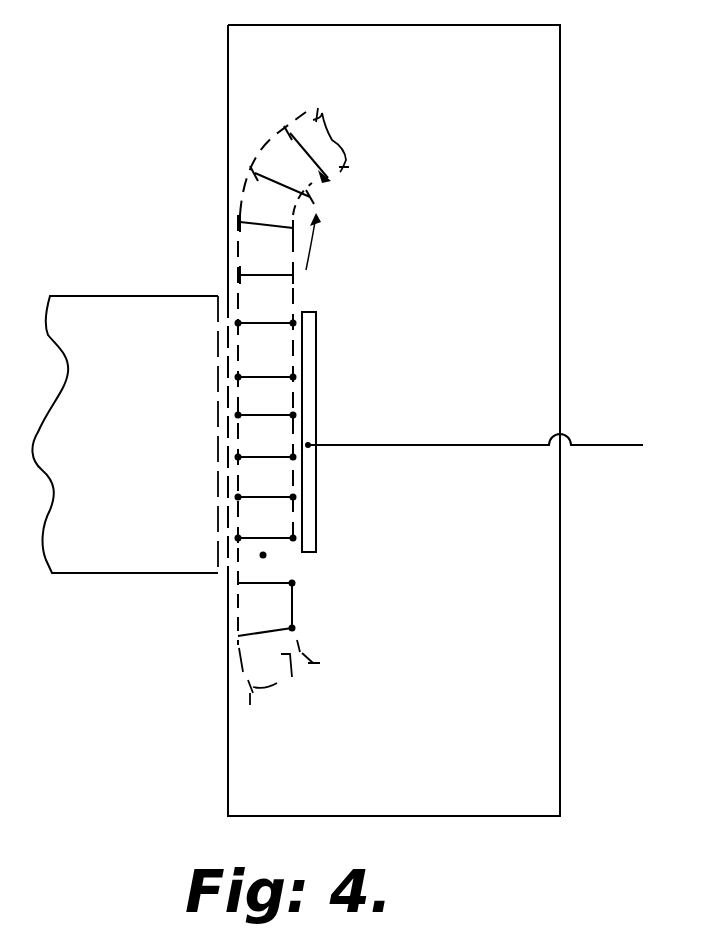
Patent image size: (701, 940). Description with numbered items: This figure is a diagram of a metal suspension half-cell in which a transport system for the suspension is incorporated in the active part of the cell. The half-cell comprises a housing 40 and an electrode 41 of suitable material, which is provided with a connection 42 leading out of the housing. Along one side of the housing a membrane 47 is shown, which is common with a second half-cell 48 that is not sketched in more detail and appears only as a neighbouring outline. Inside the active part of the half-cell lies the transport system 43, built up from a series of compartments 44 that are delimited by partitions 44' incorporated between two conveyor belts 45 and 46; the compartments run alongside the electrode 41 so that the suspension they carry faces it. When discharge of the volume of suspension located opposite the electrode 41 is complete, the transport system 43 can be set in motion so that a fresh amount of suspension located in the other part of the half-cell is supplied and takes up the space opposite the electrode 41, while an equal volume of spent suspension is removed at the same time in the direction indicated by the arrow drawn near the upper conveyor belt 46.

The housing 40 is at (560, 293).
The electrode 41 is at (308, 367).
The connection 42 is at (598, 446).
The transport system 43 is at (291, 660).
The compartments 44 is at (295, 403).
The partitions 44' is at (308, 479).
The conveyor belt 45 is at (235, 623).
The conveyor belt 46 is at (313, 190).
The membrane 47 is at (221, 437).
The second half-cell 48 is at (122, 387).